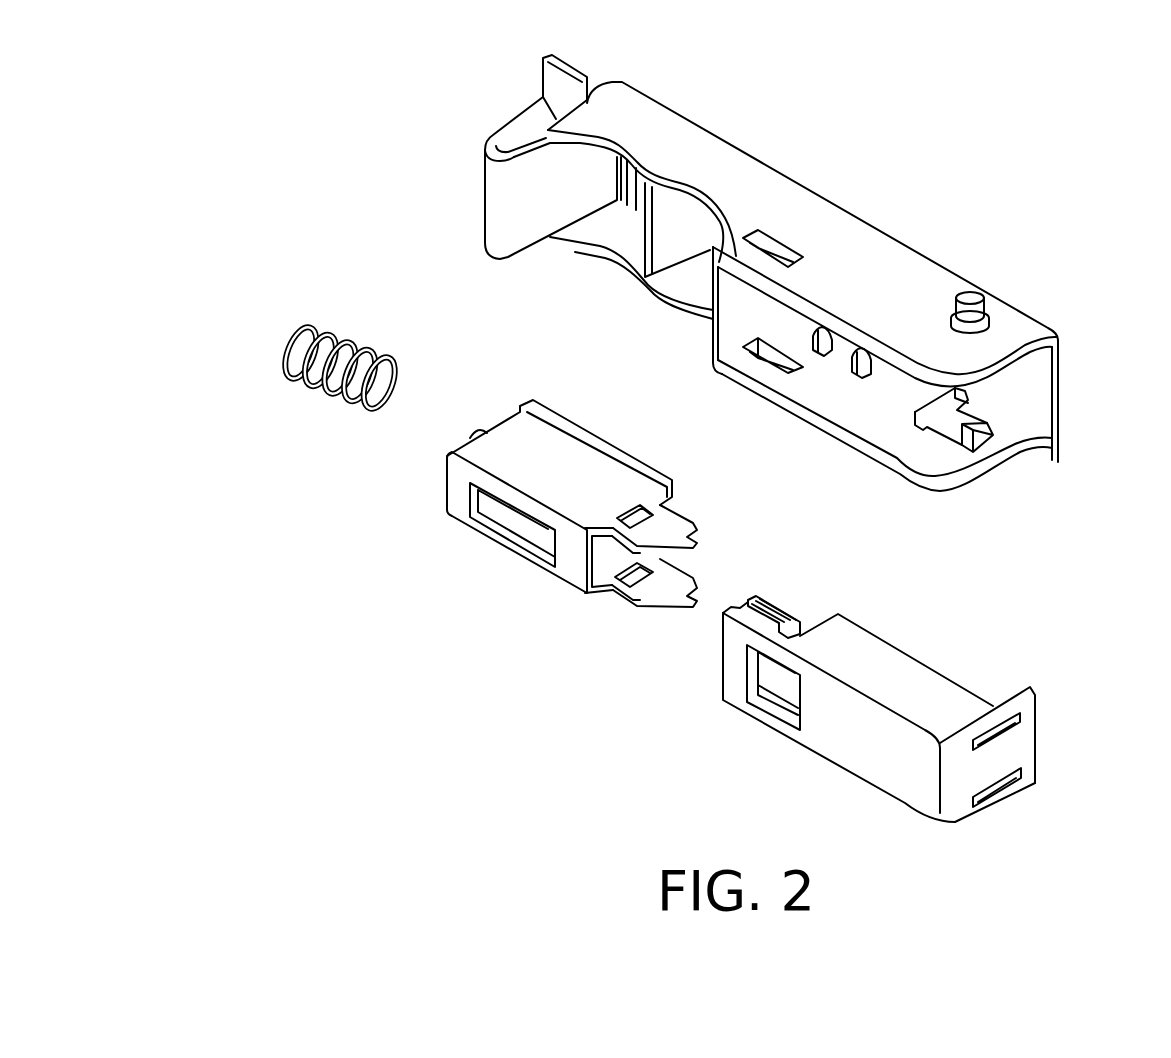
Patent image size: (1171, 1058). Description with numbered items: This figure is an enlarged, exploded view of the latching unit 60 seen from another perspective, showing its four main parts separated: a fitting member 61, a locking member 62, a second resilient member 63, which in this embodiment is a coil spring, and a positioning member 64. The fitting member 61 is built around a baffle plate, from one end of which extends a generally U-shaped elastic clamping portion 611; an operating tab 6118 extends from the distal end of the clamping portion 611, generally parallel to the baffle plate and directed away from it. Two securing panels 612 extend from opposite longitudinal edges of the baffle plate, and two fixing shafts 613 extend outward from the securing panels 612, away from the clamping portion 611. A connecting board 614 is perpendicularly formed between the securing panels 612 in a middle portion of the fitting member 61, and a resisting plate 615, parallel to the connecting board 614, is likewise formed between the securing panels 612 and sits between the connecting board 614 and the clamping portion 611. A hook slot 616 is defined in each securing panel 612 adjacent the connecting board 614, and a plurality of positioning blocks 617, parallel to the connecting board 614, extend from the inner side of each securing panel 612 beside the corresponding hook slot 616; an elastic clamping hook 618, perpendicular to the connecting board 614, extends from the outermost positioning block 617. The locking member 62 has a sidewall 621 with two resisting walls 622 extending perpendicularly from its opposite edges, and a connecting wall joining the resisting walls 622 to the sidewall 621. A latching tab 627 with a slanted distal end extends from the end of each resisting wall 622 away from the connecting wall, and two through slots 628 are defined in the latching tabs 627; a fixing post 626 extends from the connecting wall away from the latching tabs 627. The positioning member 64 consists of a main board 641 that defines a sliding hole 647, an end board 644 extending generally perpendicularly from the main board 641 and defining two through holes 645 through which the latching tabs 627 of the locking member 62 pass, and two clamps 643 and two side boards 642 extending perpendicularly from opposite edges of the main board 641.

The latching unit 60 is at (1080, 125).
The fitting member 61 is at (812, 170).
The clamping portion 611 is at (502, 135).
The operating tab 6118 is at (545, 68).
The securing panels 612 is at (695, 150).
The fixing shafts 613 is at (972, 296).
The connecting board 614 is at (747, 307).
The resisting plate 615 is at (667, 224).
The hook slot 616 is at (773, 367).
The positioning blocks 617 is at (853, 370).
The clamping hook 618 is at (955, 425).
The locking member 62 is at (490, 558).
The sidewall 621 is at (570, 572).
The resisting walls 622 is at (483, 462).
The fixing post 626 is at (476, 430).
The latching tab 627 is at (664, 595).
The through slots 628 is at (637, 573).
The second resilient member 63 is at (298, 332).
The positioning member 64 is at (925, 638).
The main board 641 is at (847, 743).
The side boards 642 is at (927, 695).
The clamps 643 is at (782, 605).
The end board 644 is at (1013, 752).
The through holes 645 is at (1013, 783).
The sliding hole 647 is at (787, 678).